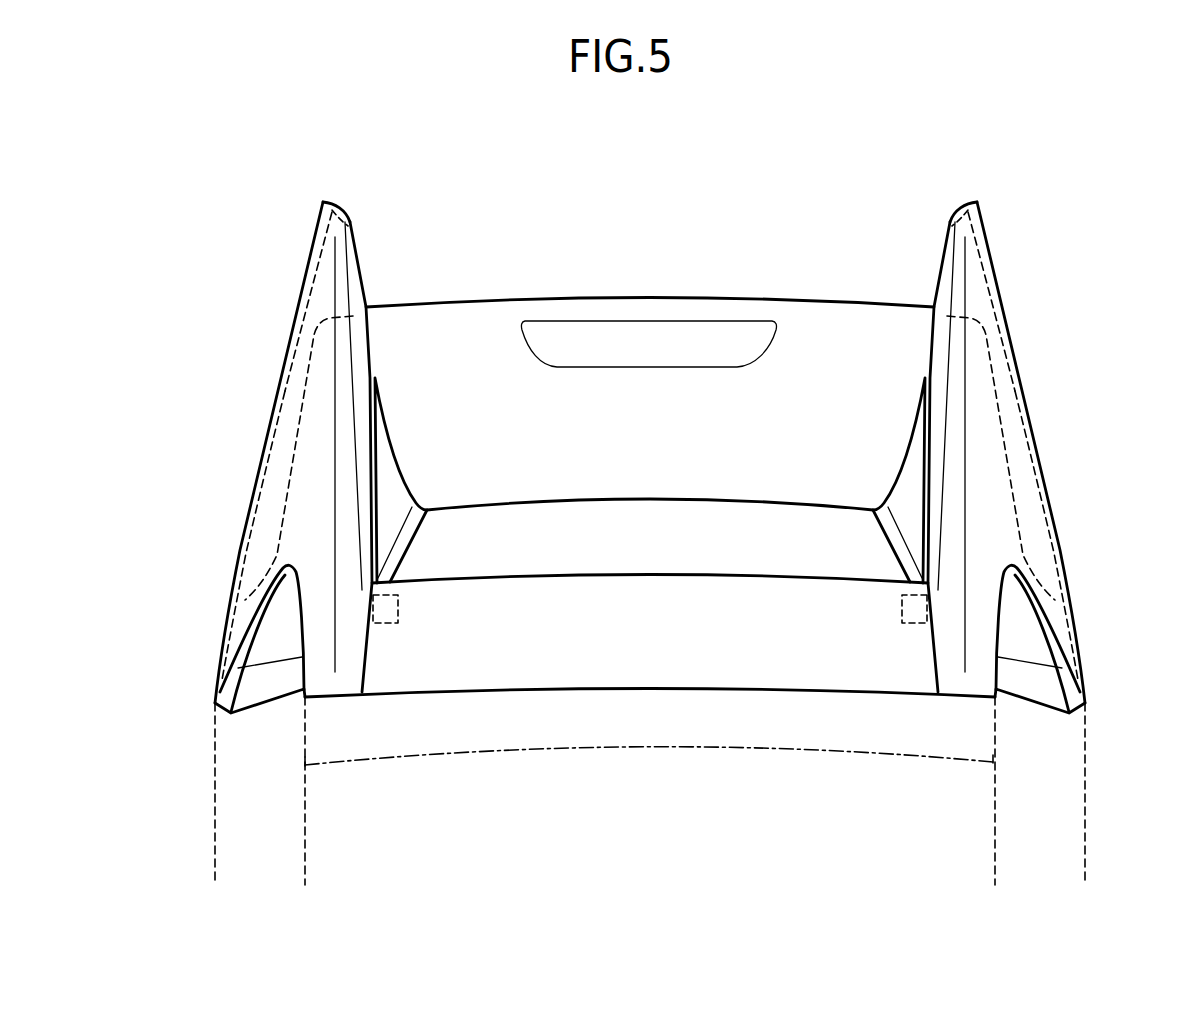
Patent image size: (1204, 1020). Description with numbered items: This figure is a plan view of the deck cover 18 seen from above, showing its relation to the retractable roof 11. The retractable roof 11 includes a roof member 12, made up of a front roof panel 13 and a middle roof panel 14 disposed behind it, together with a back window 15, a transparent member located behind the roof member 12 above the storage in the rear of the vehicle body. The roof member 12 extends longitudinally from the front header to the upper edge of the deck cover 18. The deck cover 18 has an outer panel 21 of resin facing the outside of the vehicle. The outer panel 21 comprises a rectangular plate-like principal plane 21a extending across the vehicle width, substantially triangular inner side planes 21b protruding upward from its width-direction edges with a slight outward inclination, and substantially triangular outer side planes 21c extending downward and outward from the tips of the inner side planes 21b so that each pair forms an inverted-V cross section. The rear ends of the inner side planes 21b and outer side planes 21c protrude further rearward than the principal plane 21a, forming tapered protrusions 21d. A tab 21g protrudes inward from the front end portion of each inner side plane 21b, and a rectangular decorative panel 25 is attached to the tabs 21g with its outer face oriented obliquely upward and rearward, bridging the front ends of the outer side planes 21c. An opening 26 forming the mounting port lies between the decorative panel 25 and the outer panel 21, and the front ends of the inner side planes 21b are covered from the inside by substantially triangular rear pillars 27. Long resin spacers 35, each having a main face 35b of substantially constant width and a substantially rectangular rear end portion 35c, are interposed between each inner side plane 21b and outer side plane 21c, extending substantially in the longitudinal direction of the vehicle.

The retractable roof 11 is at (263, 778).
The roof member 12 is at (994, 798).
The front roof panel 13 is at (955, 835).
The middle roof panel 14 is at (960, 725).
The back window 15 is at (500, 530).
The deck cover 18 is at (239, 511).
The outer panel 21 is at (483, 327).
The principal plane 21a is at (798, 327).
The inner side plane 21b is at (355, 335).
The outer side plane 21c is at (300, 346).
The tapered protrusion 21d is at (345, 222).
The tab 21g is at (915, 795).
The decorative panel 25 is at (782, 662).
The opening 26 is at (703, 517).
The rear pillar 27 is at (394, 447).
The spacer 35 is at (302, 268).
The main face 35b is at (272, 448).
The rear end portion 35c is at (332, 210).